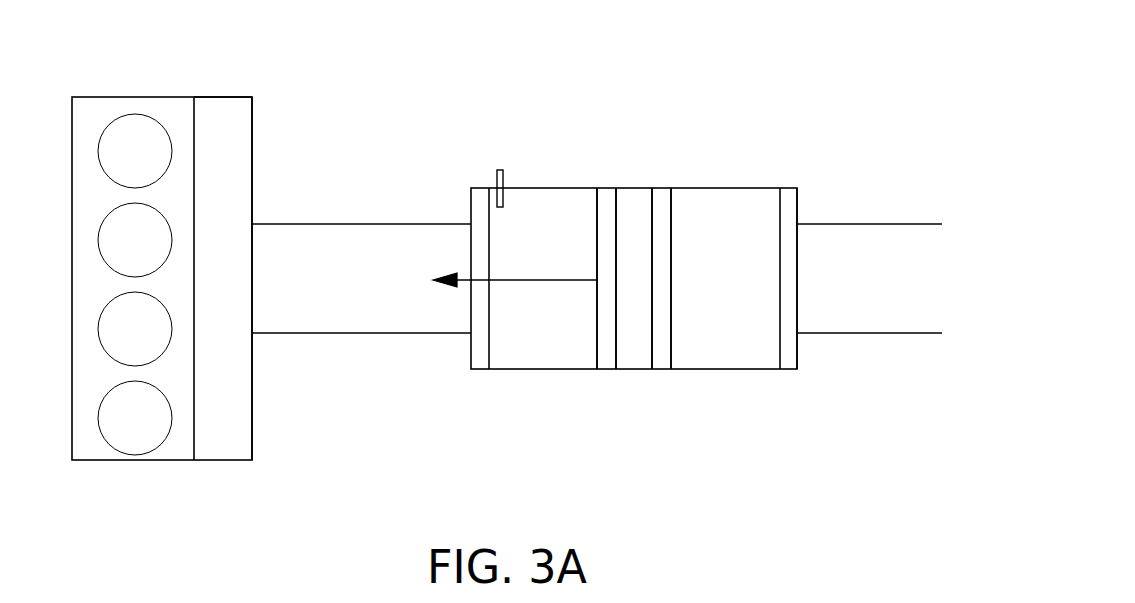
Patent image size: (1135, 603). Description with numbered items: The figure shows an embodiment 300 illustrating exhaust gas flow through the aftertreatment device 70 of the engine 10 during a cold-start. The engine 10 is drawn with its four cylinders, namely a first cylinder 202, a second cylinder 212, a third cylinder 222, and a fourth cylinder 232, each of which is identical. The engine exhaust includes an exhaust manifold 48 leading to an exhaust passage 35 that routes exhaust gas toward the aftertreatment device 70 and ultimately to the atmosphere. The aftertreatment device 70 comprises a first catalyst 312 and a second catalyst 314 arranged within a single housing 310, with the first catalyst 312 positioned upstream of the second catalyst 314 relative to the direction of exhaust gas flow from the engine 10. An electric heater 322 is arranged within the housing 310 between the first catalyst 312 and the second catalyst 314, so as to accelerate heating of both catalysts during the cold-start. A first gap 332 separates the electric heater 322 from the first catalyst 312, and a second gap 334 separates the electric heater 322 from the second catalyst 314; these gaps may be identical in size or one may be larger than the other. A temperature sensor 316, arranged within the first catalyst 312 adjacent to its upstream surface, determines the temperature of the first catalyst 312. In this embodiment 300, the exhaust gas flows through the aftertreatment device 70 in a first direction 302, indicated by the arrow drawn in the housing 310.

The embodiment 300 is at (862, 41).
The engine 10 is at (172, 97).
The exhaust manifold 48 is at (252, 97).
The first cylinder 202 is at (110, 124).
The second cylinder 212 is at (110, 213).
The third cylinder 222 is at (106, 307).
The fourth cylinder 232 is at (105, 399).
The exhaust passage 35 is at (320, 223).
The aftertreatment device 70 is at (833, 131).
The housing 310 is at (797, 188).
The first catalyst 312 is at (561, 360).
The second catalyst 314 is at (747, 360).
The temperature sensor 316 is at (500, 170).
The electric heater 322 is at (652, 188).
The first gap 332 is at (607, 369).
The second gap 334 is at (662, 369).
The first direction 302 is at (528, 280).